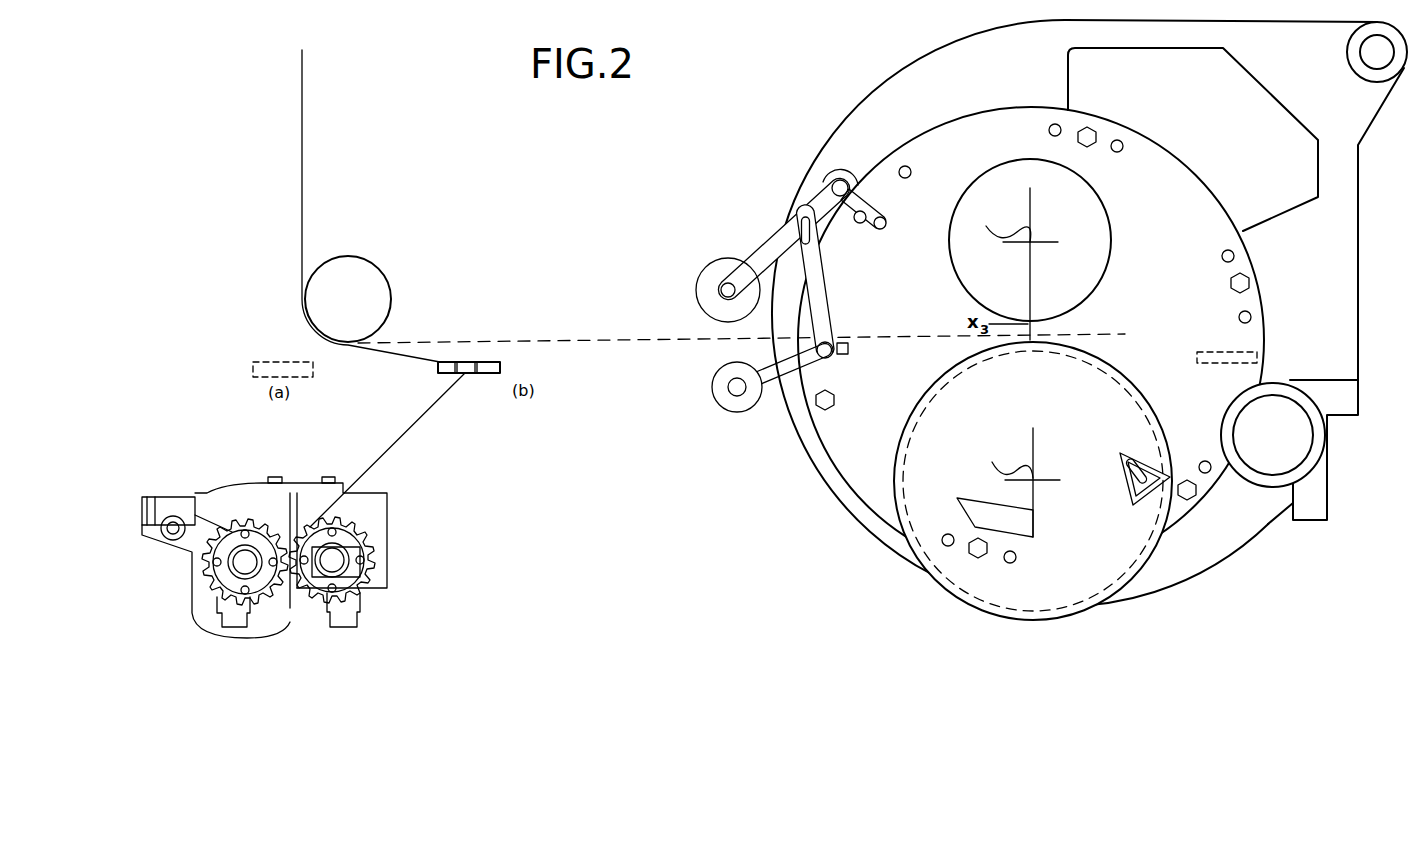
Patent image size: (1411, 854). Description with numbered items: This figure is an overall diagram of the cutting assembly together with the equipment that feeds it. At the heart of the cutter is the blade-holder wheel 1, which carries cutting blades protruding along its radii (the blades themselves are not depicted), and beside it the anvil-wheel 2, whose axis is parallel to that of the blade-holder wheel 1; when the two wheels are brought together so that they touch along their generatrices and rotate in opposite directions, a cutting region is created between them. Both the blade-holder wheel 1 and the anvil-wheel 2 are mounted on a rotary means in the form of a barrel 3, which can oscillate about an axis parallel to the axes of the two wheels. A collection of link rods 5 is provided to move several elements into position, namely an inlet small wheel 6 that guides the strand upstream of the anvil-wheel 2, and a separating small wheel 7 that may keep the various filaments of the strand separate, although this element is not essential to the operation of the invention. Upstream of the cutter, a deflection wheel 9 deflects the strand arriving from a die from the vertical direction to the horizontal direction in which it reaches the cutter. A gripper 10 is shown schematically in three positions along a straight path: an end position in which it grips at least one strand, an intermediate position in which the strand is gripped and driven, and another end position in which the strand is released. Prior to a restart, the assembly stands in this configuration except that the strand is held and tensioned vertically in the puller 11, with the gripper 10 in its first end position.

The blade-holder wheel 1 is at (1093, 236).
The anvil-wheel 2 is at (1087, 387).
The barrel 3 is at (1182, 201).
The link rods 5 is at (767, 231).
The inlet small wheel 6 is at (705, 278).
The separating small wheel 7 is at (747, 407).
The deflection wheel 9 is at (362, 280).
The gripper 10 is at (493, 375).
The puller 11 is at (183, 482).